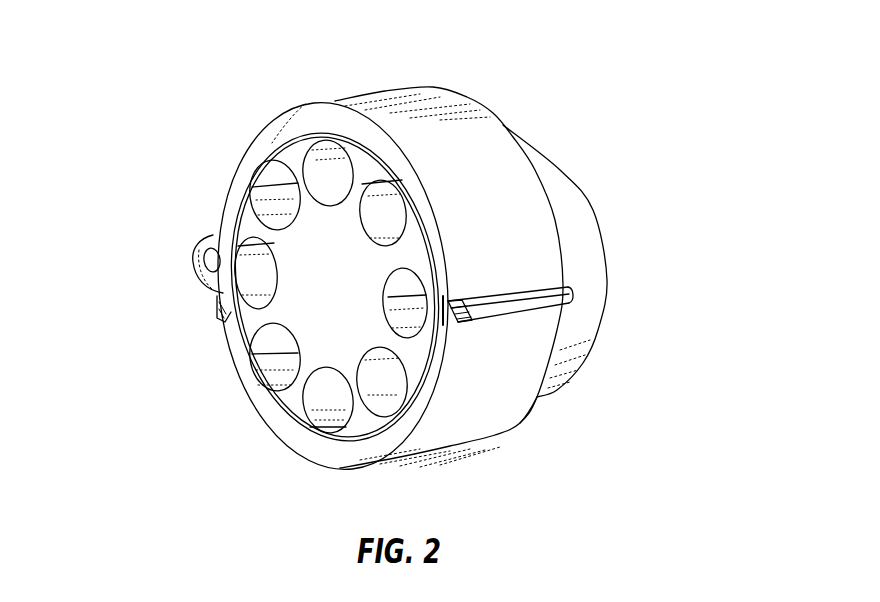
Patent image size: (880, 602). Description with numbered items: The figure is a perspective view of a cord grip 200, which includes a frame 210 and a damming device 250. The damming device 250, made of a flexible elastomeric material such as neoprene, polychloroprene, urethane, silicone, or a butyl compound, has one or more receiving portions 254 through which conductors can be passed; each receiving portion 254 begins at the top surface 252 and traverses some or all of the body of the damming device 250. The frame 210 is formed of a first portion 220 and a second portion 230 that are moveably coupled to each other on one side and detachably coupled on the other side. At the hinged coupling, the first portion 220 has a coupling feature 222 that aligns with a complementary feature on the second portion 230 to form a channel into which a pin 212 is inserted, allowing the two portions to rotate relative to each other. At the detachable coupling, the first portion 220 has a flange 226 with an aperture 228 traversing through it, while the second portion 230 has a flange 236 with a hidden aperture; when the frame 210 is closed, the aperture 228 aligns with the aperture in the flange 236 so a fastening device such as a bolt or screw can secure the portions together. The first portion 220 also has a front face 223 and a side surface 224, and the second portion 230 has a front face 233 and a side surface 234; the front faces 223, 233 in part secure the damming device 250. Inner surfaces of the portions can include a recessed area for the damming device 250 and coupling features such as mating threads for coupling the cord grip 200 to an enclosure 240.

The cord grip 200 is at (586, 42).
The frame 210 is at (183, 208).
The pin 212 is at (208, 265).
The first portion 220 is at (335, 100).
The coupling feature 222 is at (198, 252).
The front face 223 is at (250, 155).
The side surface 224 is at (433, 115).
The flange 226 is at (574, 289).
The aperture 228 is at (512, 298).
The second portion 230 is at (263, 425).
The front face 233 is at (250, 380).
The side surface 234 is at (512, 398).
The flange 236 is at (574, 302).
The enclosure 240 is at (553, 160).
The damming device 250 is at (326, 337).
The top surface 252 is at (297, 303).
The receiving portion 254 is at (412, 306).